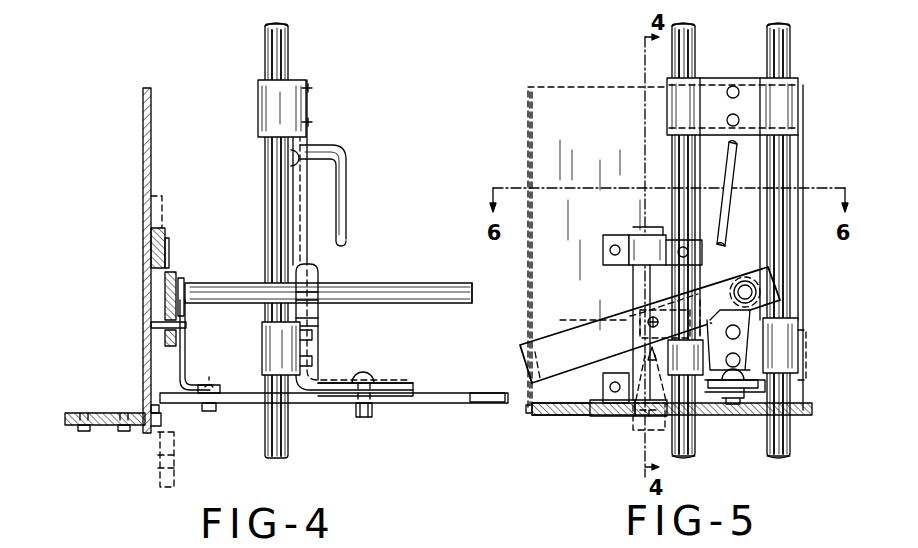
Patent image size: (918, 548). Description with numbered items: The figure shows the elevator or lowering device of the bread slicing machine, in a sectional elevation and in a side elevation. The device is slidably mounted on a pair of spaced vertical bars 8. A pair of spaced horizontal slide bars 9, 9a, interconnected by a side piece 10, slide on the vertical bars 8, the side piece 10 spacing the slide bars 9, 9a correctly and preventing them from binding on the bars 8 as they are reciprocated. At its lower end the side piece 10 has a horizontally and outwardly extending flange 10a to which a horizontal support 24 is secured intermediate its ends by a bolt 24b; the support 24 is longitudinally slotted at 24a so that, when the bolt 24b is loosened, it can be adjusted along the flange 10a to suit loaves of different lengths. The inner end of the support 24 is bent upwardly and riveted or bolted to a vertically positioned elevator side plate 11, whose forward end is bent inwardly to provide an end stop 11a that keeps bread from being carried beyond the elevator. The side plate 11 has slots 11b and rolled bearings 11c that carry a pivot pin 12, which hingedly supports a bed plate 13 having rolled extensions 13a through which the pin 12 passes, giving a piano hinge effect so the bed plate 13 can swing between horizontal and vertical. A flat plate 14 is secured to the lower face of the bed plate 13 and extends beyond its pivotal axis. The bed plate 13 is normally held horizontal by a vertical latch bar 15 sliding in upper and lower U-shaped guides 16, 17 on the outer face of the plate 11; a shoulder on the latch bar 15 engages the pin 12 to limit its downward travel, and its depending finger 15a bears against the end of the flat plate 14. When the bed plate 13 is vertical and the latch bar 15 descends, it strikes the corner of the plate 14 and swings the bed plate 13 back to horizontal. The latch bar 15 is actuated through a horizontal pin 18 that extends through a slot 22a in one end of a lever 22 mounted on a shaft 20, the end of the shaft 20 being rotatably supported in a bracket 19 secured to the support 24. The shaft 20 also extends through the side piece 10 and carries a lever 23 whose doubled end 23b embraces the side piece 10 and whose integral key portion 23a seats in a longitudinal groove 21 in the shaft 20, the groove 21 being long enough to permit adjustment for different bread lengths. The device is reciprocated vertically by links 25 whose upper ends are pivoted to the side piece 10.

In FIG. 4, the vertical bars 8 is at (283, 52).
In FIG. 5, the vertical bars 8 is at (695, 42).
In FIG. 4, the horizontal slide bar 9 is at (264, 104).
In FIG. 5, the horizontal slide bar 9 is at (798, 80).
In FIG. 4, the horizontal slide bar 9a is at (268, 354).
In FIG. 5, the horizontal slide bar 9a is at (795, 347).
In FIG. 4, the side piece 10 is at (307, 252).
In FIG. 5, the side piece 10 is at (751, 247).
In FIG. 4, the flange 10a is at (400, 390).
In FIG. 5, the flange 10a is at (766, 390).
In FIG. 4, the elevator side plate 11 is at (143, 118).
In FIG. 5, the elevator side plate 11 is at (598, 247).
In FIG. 5, the end stop 11a is at (528, 137).
In FIG. 4, the slots 11b is at (150, 407).
In FIG. 5, the bearings 11c is at (560, 415).
In FIG. 4, the pivot pin 12 is at (152, 424).
In FIG. 5, the pivot pin 12 is at (527, 410).
In FIG. 4, the bed plate 13 is at (110, 413).
In FIG. 5, the rolled extensions 13a is at (602, 416).
In FIG. 4, the flat plate 14 is at (103, 427).
In FIG. 5, the flat plate 14 is at (656, 397).
In FIG. 4, the latch bar 15 is at (164, 230).
In FIG. 5, the latch bar 15 is at (633, 288).
In FIG. 4, the depending finger 15a is at (163, 470).
In FIG. 5, the depending finger 15a is at (648, 432).
In FIG. 4, the upper U-shaped guide 16 is at (168, 248).
In FIG. 5, the upper U-shaped guide 16 is at (606, 240).
In FIG. 4, the lower U-shaped guide 17 is at (178, 403).
In FIG. 5, the lower U-shaped guide 17 is at (614, 400).
In FIG. 4, the pin 18 is at (180, 332).
In FIG. 5, the pin 18 is at (673, 269).
In FIG. 4, the bracket 19 is at (186, 364).
In FIG. 5, the bracket 19 is at (806, 370).
In FIG. 4, the shaft 20 is at (200, 288).
In FIG. 5, the shaft 20 is at (752, 290).
In FIG. 4, the longitudinal groove 21 is at (473, 292).
In FIG. 5, the longitudinal groove 21 is at (496, 300).
In FIG. 4, the lever 22 is at (175, 274).
In FIG. 5, the lever 22 is at (621, 314).
In FIG. 4, the slot 22a is at (187, 325).
In FIG. 5, the slot 22a is at (642, 416).
In FIG. 4, the lever 23 is at (318, 348).
In FIG. 5, the lever 23 is at (650, 325).
In FIG. 5, the key portion 23a is at (740, 290).
In FIG. 4, the doubled end 23b is at (288, 272).
In FIG. 5, the doubled end 23b is at (666, 318).
In FIG. 4, the horizontal support 24 is at (241, 403).
In FIG. 5, the horizontal support 24 is at (800, 327).
In FIG. 5, the slot 24a is at (740, 416).
In FIG. 4, the bolt 24b is at (366, 381).
In FIG. 5, the bolt 24b is at (737, 340).
In FIG. 4, the links 25 is at (346, 178).
In FIG. 5, the links 25 is at (735, 172).